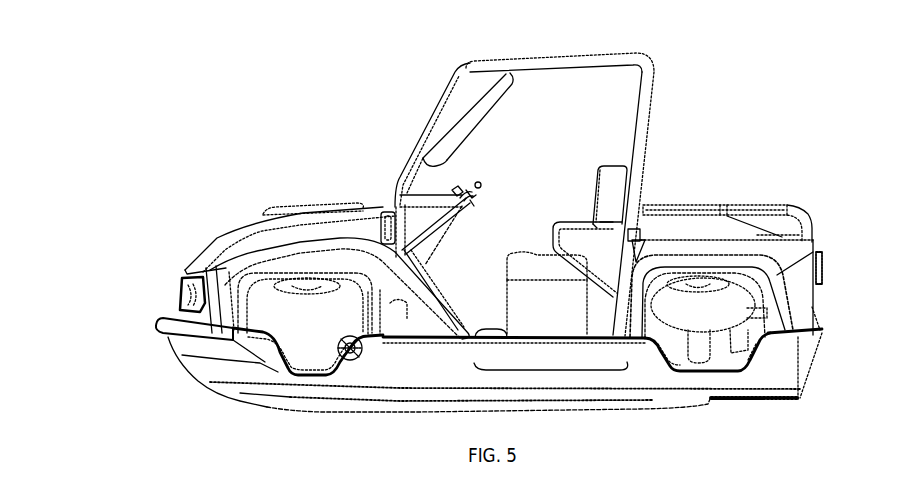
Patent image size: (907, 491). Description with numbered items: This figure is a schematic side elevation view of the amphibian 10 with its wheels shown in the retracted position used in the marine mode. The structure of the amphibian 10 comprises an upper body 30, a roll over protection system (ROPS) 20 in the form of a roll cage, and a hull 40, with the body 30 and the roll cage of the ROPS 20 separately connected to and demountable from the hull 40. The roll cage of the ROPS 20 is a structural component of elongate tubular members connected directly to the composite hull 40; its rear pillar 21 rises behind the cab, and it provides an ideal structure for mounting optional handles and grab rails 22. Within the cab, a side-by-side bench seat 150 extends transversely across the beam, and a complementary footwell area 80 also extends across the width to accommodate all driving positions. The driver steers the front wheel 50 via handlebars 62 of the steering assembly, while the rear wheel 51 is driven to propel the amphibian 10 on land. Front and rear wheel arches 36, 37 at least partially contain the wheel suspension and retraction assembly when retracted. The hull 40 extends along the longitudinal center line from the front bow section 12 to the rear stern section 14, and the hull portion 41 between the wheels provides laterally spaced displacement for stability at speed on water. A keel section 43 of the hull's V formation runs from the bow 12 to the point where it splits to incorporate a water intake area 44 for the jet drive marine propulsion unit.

The amphibian 10 is at (317, 137).
The front bow section 12 is at (150, 326).
The rear stern section 14 is at (824, 305).
The roll over protection system (ROPS) 20 is at (661, 91).
The rear pillar 21 is at (652, 142).
The handles and/or grab rails 22 is at (497, 103).
The upper body 30 is at (197, 232).
The front wheel arch 36 is at (324, 367).
The rear wheel arch 37 is at (742, 367).
The hull 40 is at (217, 398).
The hull portion 41 is at (431, 378).
The keel section 43 is at (360, 410).
The water intake area 44 is at (714, 406).
The front wheel 50 is at (316, 318).
The rear wheel 51 is at (715, 322).
The handlebars 62 is at (482, 186).
The footwell area 80 is at (503, 322).
The bench seat 150 is at (532, 262).